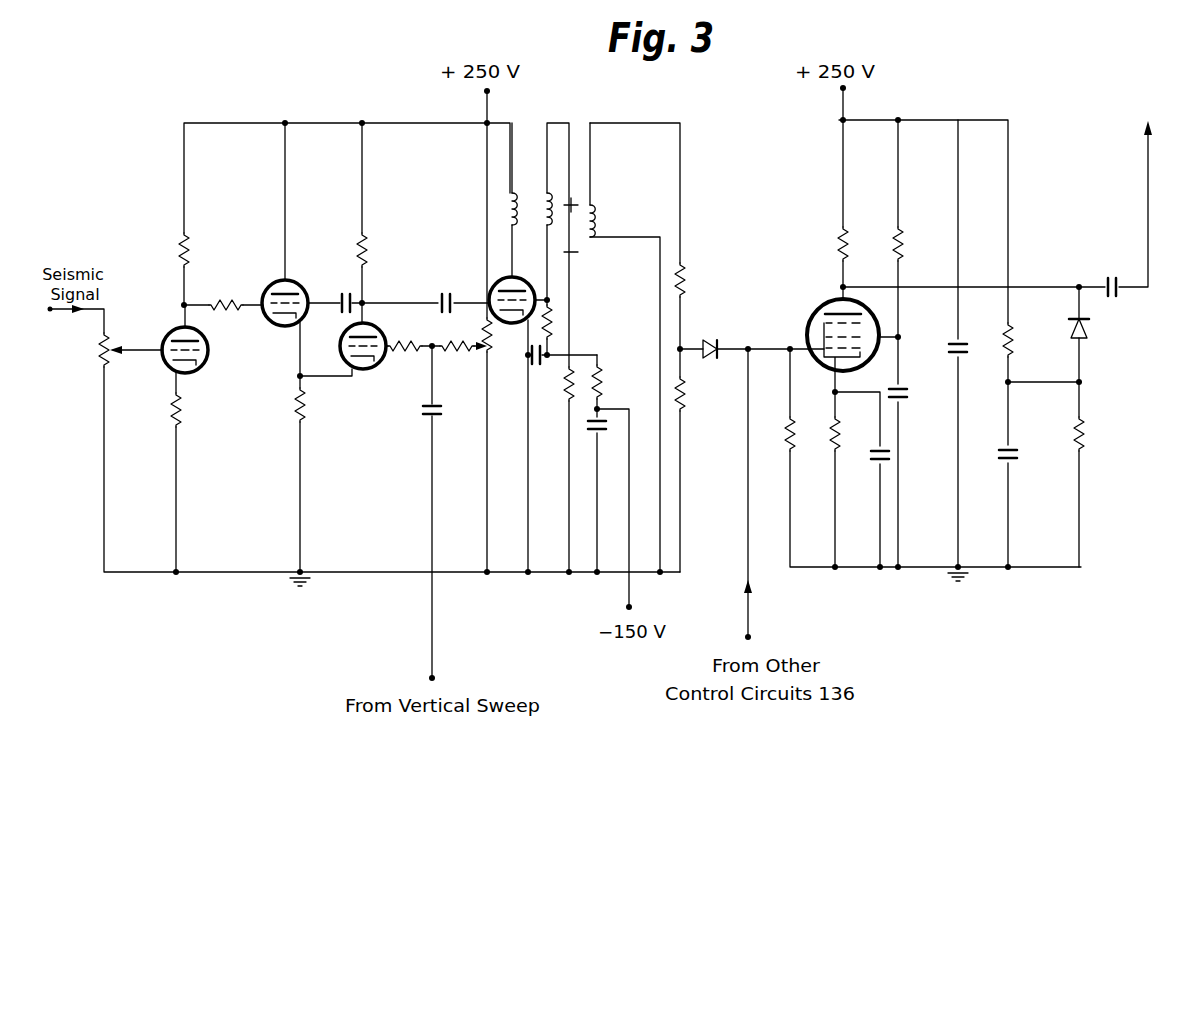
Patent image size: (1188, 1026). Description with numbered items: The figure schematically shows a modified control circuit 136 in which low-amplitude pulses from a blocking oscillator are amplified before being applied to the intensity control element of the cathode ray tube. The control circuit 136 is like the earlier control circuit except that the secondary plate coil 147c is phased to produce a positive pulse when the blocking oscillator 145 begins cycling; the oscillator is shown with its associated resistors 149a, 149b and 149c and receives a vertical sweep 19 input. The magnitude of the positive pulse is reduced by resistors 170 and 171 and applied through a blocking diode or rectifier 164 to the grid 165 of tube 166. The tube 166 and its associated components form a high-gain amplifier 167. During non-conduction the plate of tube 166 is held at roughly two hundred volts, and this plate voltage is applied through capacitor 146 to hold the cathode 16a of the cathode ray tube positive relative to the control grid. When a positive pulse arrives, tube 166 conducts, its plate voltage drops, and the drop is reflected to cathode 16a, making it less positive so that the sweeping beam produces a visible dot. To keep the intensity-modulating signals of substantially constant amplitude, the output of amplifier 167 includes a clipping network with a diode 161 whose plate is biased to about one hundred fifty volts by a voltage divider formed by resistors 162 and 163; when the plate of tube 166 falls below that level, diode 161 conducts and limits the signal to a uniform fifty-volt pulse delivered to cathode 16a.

The control circuit 136 is at (325, 104).
The blocking oscillator 145 is at (476, 269).
The capacitor 146 is at (538, 364).
The secondary plate coil 147c is at (596, 214).
The resistor 149a is at (601, 372).
The resistor 149b is at (562, 398).
The resistor 149c is at (552, 331).
The diode 161 is at (1090, 333).
The resistor 162 is at (1004, 351).
The resistor 163 is at (1085, 428).
The blocking diode 164 is at (707, 342).
The grid 165 is at (815, 366).
The tube 166 is at (816, 318).
The high-gain amplifier 167 is at (886, 208).
The resistor 170 is at (684, 271).
The resistor 171 is at (686, 395).
The vertical sweep 19 is at (436, 632).
The cathode 16a is at (1127, 179).